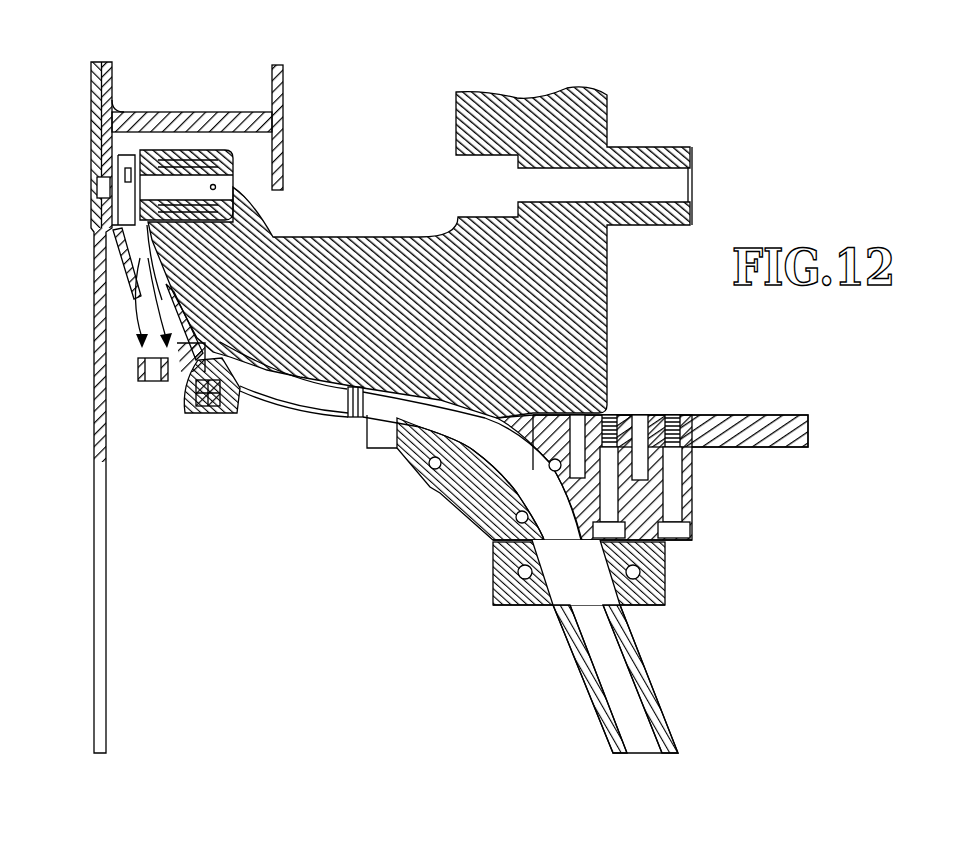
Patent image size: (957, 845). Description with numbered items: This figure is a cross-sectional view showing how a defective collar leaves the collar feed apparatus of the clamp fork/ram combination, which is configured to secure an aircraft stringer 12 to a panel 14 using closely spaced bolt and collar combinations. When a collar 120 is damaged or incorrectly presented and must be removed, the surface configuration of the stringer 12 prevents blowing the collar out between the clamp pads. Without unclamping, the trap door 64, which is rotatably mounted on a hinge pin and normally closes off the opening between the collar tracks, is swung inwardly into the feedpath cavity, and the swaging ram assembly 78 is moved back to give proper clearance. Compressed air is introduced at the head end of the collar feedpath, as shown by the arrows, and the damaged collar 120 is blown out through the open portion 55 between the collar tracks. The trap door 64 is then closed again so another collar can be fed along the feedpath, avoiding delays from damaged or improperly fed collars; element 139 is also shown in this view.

The aircraft stringer 12 is at (207, 111).
The panel 14 is at (91, 79).
The open portion 55 is at (150, 305).
The ejection door 64 is at (192, 380).
The swaging ram assembly 78 is at (216, 187).
The collar 120 is at (140, 382).
The liner 139 is at (328, 402).